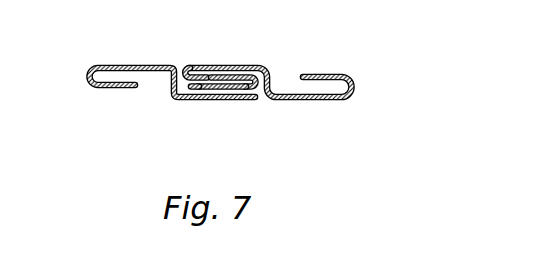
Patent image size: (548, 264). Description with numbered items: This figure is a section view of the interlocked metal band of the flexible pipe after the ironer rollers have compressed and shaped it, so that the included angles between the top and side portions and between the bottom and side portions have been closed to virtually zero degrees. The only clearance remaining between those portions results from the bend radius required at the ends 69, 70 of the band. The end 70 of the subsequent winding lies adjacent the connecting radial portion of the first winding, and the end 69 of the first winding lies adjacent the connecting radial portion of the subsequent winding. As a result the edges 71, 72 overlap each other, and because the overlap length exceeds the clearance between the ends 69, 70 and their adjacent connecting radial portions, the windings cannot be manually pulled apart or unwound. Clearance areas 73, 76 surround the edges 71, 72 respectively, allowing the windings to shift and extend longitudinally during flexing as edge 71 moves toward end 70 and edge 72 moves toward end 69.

The end 69 is at (84, 67).
The end 70 is at (270, 75).
The edge 71 is at (243, 92).
The edge 72 is at (191, 85).
The clearance area 73 is at (233, 81).
The clearance area 76 is at (190, 79).